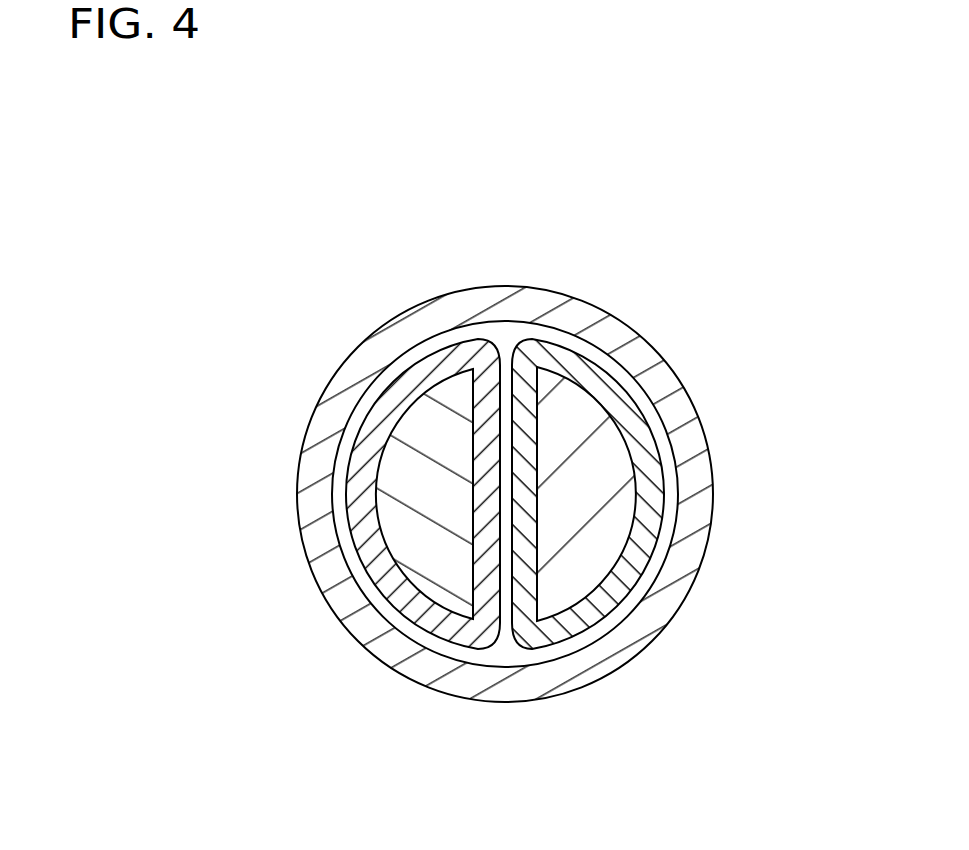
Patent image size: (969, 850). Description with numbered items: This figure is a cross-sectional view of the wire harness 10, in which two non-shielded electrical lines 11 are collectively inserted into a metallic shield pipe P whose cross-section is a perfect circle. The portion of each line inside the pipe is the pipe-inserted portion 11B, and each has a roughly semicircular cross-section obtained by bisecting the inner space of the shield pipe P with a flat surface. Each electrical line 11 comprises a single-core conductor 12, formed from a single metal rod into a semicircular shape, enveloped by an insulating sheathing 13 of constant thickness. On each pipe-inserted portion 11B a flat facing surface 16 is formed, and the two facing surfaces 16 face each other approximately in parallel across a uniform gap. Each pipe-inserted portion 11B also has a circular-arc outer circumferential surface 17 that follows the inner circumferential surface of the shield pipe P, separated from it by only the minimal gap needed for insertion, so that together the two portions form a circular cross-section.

The wire harness 10 is at (600, 349).
The electrical line 11 is at (452, 576).
The pipe-inserted portion 11B is at (558, 568).
The single-core conductor 12 is at (600, 447).
The insulating sheathing 13 is at (650, 470).
The facing surface 16 is at (512, 452).
The outer circumferential surface 17 is at (658, 540).
The shield pipe P is at (511, 469).